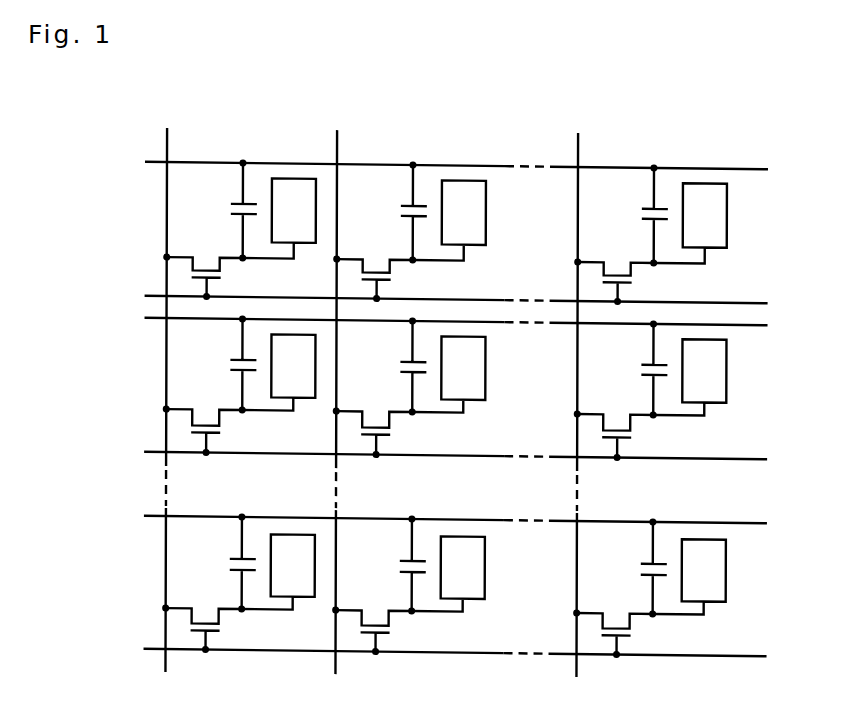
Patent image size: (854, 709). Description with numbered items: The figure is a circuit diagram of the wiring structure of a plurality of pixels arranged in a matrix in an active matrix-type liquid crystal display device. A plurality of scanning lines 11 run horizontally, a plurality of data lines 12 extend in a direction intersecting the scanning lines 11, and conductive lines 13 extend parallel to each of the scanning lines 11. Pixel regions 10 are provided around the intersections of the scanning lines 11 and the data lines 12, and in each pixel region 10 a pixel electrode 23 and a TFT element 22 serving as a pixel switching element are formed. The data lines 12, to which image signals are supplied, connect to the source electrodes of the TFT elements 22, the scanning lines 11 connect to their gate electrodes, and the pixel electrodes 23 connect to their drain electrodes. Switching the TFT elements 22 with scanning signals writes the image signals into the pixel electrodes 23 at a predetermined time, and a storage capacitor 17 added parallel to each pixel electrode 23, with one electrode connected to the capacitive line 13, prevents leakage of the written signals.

The pixel region 10 is at (155, 232).
The scanning line 11 is at (145, 296).
The data line 12 is at (169, 142).
The conductive line 13 is at (145, 162).
The storage capacitor 17 is at (215, 209).
The TFT element 22 is at (242, 277).
The pixel electrode 23 is at (294, 186).